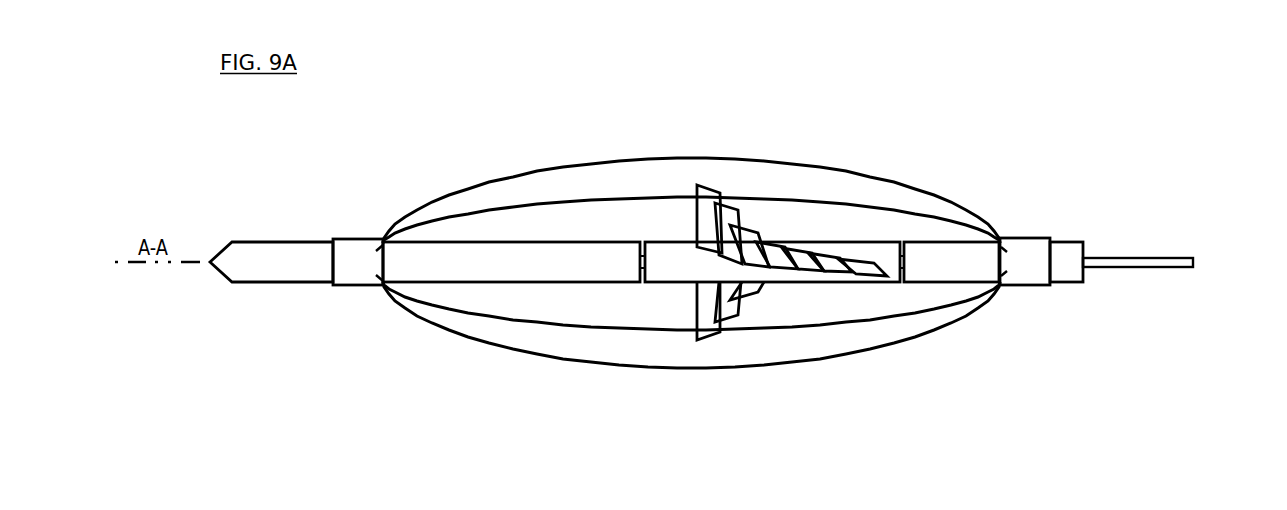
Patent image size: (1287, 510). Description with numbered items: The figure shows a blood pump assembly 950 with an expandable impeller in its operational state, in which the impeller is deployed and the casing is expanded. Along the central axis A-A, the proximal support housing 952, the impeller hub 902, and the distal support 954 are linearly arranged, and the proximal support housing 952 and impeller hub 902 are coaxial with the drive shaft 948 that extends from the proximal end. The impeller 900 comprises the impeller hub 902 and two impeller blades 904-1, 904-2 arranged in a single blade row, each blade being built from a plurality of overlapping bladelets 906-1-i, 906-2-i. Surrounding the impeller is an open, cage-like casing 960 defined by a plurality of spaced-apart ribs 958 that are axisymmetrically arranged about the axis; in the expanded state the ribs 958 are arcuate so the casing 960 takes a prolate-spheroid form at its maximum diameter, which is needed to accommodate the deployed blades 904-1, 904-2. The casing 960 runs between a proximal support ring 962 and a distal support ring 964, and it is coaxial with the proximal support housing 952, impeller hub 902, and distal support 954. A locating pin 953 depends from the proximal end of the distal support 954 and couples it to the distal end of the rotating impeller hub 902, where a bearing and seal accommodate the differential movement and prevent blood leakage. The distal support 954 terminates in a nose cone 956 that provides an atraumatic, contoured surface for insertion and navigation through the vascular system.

The pump assembly 950 is at (441, 139).
The impeller 900 is at (655, 217).
The bladelets 906-1-i is at (710, 184).
The impeller blade 904-1 is at (771, 217).
The bladelets 906-2-i is at (708, 330).
The impeller blade 904-2 is at (756, 317).
The distal support ring 964 is at (357, 257).
The nose cone 956 is at (223, 267).
The distal support 954 is at (523, 276).
The impeller hub 902 is at (702, 272).
The proximal support housing 952 is at (960, 276).
The proximal support ring 962 is at (1024, 272).
The drive shaft 948 is at (1145, 258).
The locating pin 953 is at (643, 410).
The ribs 958 is at (578, 362).
The casing 960 is at (498, 366).